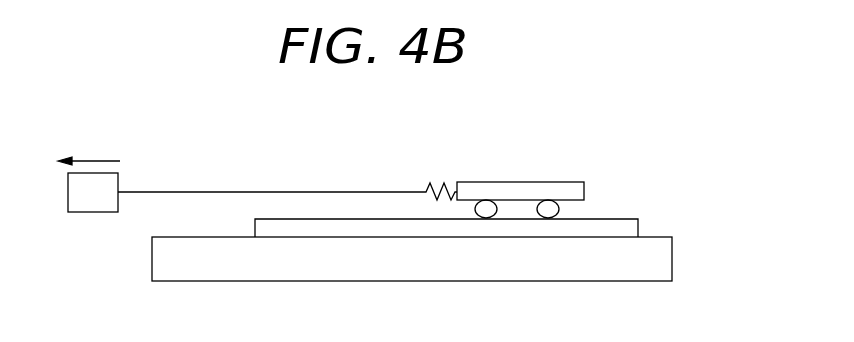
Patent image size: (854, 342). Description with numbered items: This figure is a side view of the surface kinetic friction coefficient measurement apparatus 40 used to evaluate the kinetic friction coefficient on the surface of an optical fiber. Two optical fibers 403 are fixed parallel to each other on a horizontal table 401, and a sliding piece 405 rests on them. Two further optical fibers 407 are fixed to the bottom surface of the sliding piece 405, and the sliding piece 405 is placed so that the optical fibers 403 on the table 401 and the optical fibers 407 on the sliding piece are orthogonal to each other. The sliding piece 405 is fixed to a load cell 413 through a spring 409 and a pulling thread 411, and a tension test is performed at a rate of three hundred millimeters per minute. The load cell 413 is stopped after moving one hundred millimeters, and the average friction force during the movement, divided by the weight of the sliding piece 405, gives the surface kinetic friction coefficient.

The surface kinetic friction coefficient measurement apparatus 40 is at (327, 155).
The horizontal table 401 is at (225, 273).
The optical fibers 403 is at (361, 230).
The sliding piece 405 is at (533, 181).
The optical fibers 407 is at (485, 213).
The spring 409 is at (430, 182).
The pulling thread 411 is at (203, 190).
The load cell 413 is at (92, 214).